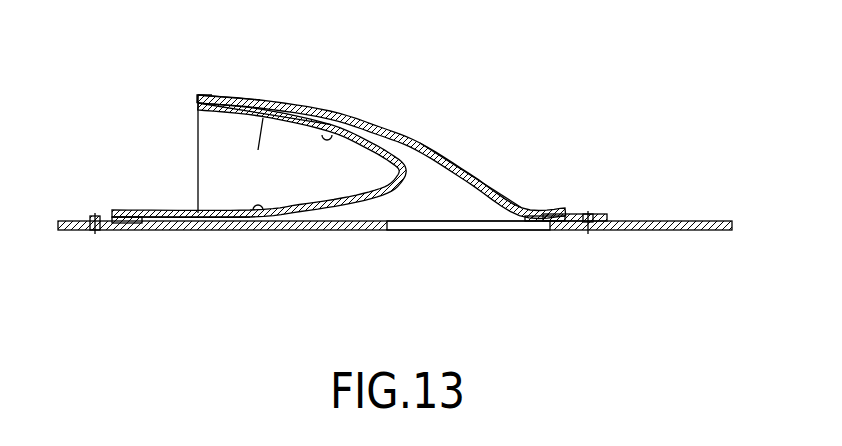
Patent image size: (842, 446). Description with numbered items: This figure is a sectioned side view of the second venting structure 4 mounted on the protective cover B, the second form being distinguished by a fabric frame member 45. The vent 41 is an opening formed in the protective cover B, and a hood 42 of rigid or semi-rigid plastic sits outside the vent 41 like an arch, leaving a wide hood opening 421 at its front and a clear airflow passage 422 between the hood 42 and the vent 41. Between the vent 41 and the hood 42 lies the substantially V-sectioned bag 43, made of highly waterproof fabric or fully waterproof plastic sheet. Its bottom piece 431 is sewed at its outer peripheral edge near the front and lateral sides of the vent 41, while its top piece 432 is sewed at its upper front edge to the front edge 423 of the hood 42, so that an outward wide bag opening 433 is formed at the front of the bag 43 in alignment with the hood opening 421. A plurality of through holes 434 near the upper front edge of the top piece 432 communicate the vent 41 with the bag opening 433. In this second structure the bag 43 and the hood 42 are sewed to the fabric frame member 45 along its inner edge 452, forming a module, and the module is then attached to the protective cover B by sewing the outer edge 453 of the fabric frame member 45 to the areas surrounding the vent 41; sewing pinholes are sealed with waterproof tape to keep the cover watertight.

The venting structure 4 is at (352, 167).
The vent 41 is at (428, 231).
The hood 42 is at (413, 142).
The hood opening 421 is at (198, 120).
The airflow passage 422 is at (425, 175).
The front edge of the hood 423 is at (218, 96).
The V-sectioned bag 43 is at (393, 200).
The bottom piece 431 is at (250, 222).
The top piece 432 is at (323, 128).
The bag opening 433 is at (212, 137).
The through holes 434 is at (268, 149).
The fabric frame member 45 is at (580, 213).
The inner edge 452 is at (135, 230).
The outer edge 453 is at (93, 234).
The protective cover B is at (704, 236).